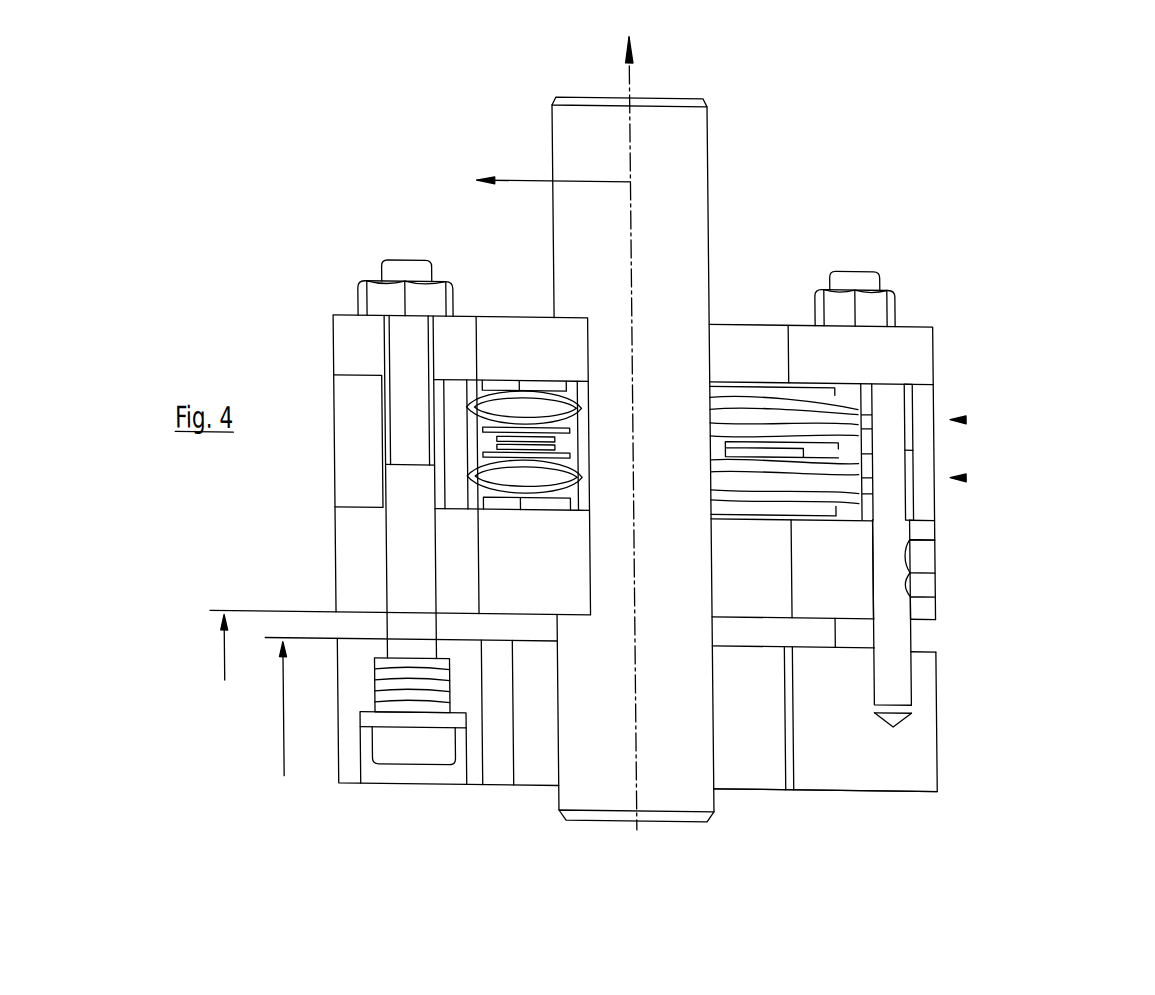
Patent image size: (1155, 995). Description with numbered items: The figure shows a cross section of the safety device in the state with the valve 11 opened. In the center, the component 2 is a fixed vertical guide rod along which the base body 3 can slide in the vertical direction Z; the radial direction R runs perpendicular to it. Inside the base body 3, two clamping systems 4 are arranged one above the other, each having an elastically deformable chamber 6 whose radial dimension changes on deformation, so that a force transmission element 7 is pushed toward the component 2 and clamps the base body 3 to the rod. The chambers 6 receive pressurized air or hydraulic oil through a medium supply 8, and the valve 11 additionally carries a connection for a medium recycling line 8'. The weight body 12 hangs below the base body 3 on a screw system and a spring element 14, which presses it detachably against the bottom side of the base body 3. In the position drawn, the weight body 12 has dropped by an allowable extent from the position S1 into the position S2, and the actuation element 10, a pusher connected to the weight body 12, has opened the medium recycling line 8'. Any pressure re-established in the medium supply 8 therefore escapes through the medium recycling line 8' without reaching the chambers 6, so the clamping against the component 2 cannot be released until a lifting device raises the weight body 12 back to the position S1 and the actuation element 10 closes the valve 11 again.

The component 2 is at (679, 195).
The base body 3 is at (908, 351).
The clamping system 4 is at (953, 473).
The elastically deformable chamber 6 is at (504, 485).
The force transmission element 7 is at (579, 440).
The medium supply 8 is at (990, 572).
The medium recycling line 8' is at (992, 607).
The actuation element 10 is at (882, 654).
The valve 11 is at (886, 568).
The weight body 12 is at (886, 746).
The spring element 14 is at (407, 692).
The vertical direction Z is at (631, 76).
The radial direction R is at (534, 180).
The position S1 is at (273, 651).
The position S2 is at (411, 709).